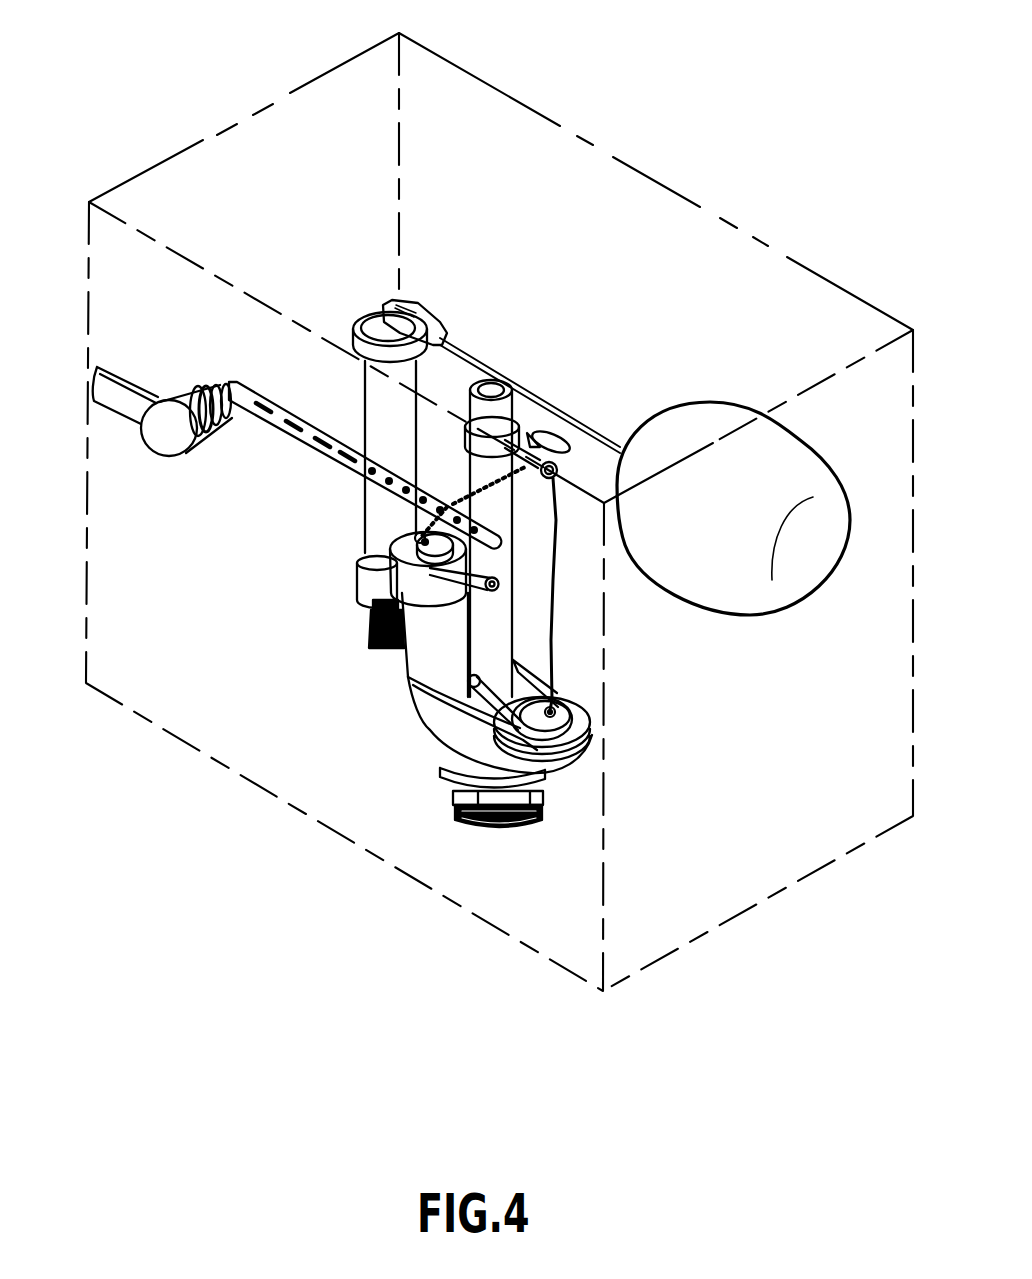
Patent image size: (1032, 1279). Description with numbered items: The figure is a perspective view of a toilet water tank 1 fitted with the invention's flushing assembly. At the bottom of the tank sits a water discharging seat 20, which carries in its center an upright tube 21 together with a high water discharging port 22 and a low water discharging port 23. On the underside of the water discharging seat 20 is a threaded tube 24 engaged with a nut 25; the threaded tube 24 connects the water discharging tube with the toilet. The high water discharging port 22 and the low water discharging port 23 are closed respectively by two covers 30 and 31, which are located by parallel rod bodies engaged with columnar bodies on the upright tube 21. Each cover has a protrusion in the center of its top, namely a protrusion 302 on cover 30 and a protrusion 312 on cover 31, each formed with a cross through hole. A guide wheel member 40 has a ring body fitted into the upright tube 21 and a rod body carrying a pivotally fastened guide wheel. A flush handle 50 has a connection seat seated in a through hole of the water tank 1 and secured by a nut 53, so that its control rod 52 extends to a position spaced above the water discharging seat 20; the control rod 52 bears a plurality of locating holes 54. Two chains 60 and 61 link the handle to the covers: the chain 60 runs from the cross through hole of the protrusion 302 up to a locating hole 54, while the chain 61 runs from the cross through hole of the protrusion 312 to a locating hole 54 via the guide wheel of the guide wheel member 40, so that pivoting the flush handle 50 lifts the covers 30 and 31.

The water tank 1 is at (320, 72).
The water discharging seat 20 is at (445, 732).
The upright tube 21 is at (492, 390).
The high water discharging port 22 is at (424, 643).
The low water discharging port 23 is at (557, 775).
The threaded tube 24 is at (525, 830).
The nut 25 is at (545, 800).
The cover 30 is at (395, 553).
The protrusion 302 is at (414, 540).
The cover 31 is at (580, 725).
The protrusion 312 is at (560, 705).
The guide wheel member 40 is at (603, 458).
The flush handle 50 is at (128, 405).
The control rod 52 is at (281, 410).
The nut 53 is at (205, 382).
The locating holes 54 is at (350, 463).
The chain 60 is at (440, 502).
The chain 61 is at (560, 593).